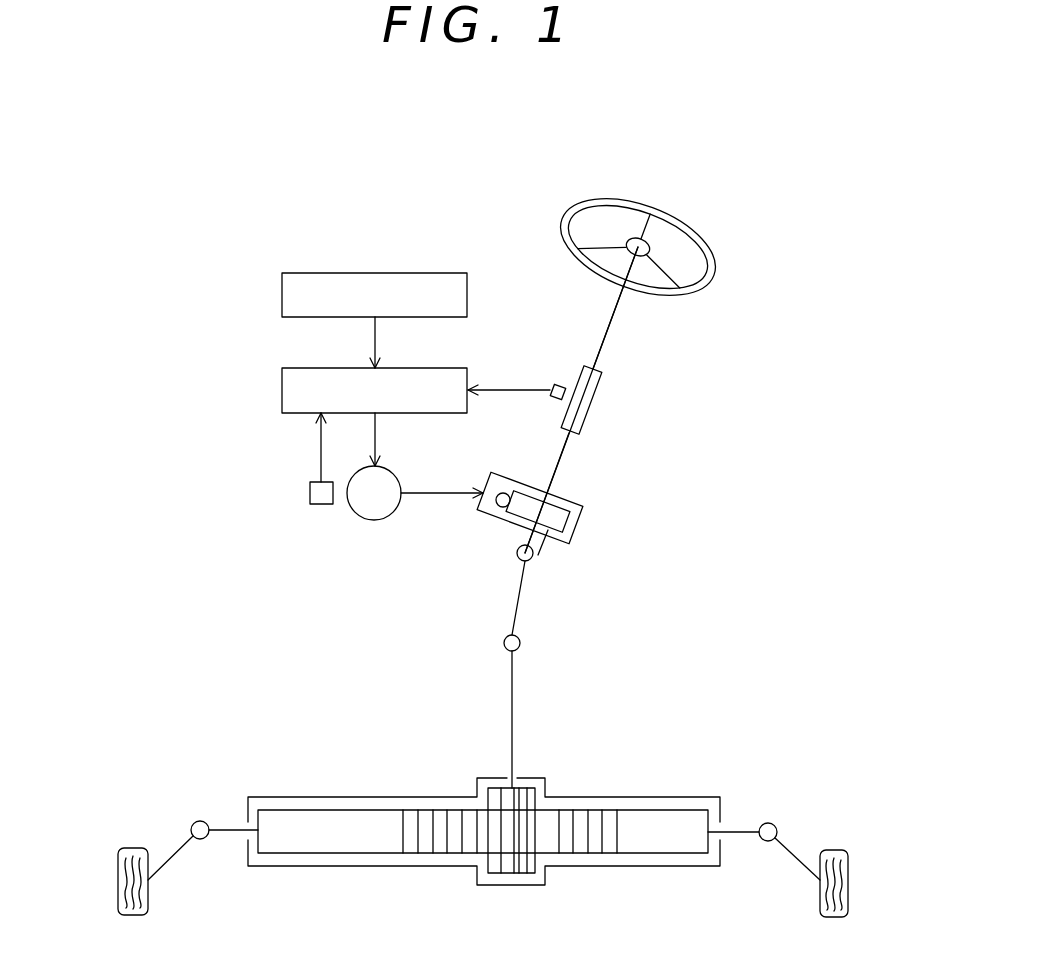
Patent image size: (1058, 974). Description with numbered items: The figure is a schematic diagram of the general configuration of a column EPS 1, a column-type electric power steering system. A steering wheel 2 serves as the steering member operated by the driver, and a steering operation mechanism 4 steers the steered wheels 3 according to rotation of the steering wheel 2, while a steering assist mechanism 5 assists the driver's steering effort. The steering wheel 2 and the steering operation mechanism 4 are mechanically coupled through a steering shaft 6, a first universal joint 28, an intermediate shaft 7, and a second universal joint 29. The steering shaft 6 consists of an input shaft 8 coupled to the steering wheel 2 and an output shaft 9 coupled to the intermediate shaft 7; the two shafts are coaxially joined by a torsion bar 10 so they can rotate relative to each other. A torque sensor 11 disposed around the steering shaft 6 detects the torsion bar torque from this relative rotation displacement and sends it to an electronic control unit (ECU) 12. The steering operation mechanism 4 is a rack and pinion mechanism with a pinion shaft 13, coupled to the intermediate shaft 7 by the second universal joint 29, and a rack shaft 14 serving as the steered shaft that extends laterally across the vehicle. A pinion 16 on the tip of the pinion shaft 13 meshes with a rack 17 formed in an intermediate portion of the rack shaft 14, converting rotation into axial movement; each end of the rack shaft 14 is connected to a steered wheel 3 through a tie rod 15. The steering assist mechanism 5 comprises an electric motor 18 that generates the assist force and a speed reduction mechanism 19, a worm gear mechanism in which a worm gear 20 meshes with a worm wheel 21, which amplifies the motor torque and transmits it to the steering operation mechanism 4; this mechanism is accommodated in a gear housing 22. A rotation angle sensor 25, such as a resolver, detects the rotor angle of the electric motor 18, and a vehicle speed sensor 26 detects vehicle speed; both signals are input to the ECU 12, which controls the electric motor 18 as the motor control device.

The column EPS 1 is at (368, 199).
The steering wheel 2 is at (642, 205).
The steered wheels 3 is at (132, 848).
The steering operation mechanism 4 is at (484, 839).
The steering assist mechanism 5 is at (542, 507).
The steering shaft 6 is at (614, 317).
The intermediate shaft 7 is at (518, 612).
The input shaft 8 is at (602, 352).
The output shaft 9 is at (569, 446).
The torsion bar 10 is at (586, 404).
The torque sensor 11 is at (543, 405).
The electronic control unit (ECU) 12 is at (282, 388).
The pinion shaft 13 is at (513, 706).
The rack shaft 14 is at (662, 855).
The tie rod 15 is at (175, 853).
The pinion 16 is at (510, 874).
The rack 17 is at (426, 853).
The electric motor 18 is at (375, 519).
The speed reduction mechanism 19 is at (587, 498).
The worm gear 20 is at (497, 506).
The worm wheel 21 is at (565, 527).
The gear housing 22 is at (553, 543).
The rotation angle sensor 25 is at (310, 493).
The vehicle speed sensor 26 is at (282, 293).
The first universal joint 28 is at (517, 556).
The second universal joint 29 is at (504, 645).